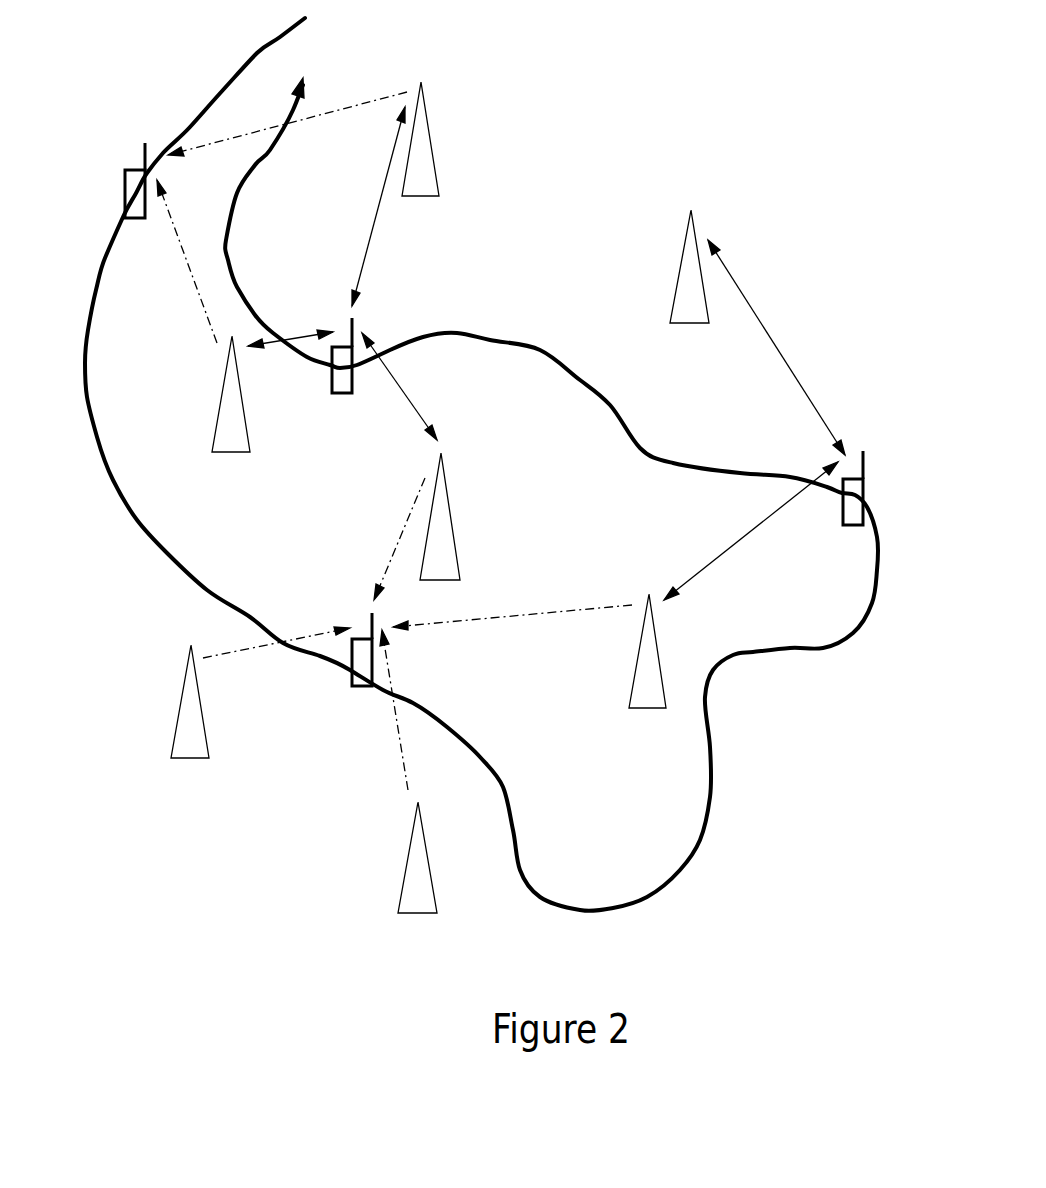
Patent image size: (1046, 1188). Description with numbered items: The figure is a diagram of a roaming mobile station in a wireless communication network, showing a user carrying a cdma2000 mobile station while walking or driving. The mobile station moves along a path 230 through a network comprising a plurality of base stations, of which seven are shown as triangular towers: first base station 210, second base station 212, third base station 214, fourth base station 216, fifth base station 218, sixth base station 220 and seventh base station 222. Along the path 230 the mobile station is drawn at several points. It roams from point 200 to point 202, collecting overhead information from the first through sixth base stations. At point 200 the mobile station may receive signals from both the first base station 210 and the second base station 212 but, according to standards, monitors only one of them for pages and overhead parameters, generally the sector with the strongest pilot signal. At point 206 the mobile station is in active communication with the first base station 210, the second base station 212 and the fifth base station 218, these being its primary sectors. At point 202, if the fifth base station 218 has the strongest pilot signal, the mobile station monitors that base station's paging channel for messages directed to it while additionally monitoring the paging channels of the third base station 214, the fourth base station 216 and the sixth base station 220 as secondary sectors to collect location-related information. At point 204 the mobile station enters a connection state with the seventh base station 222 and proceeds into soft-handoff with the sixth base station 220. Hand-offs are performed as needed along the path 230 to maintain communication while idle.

The point 200 is at (113, 191).
The point 202 is at (340, 677).
The point 204 is at (872, 501).
The point 206 is at (344, 427).
The base station 1 210 is at (442, 109).
The base station 2 212 is at (246, 375).
The base station 3 214 is at (206, 688).
The base station 4 216 is at (430, 825).
The base station 5 218 is at (461, 484).
The base station 6 220 is at (665, 620).
The base station 7 222 is at (702, 227).
The path 230 is at (252, 196).